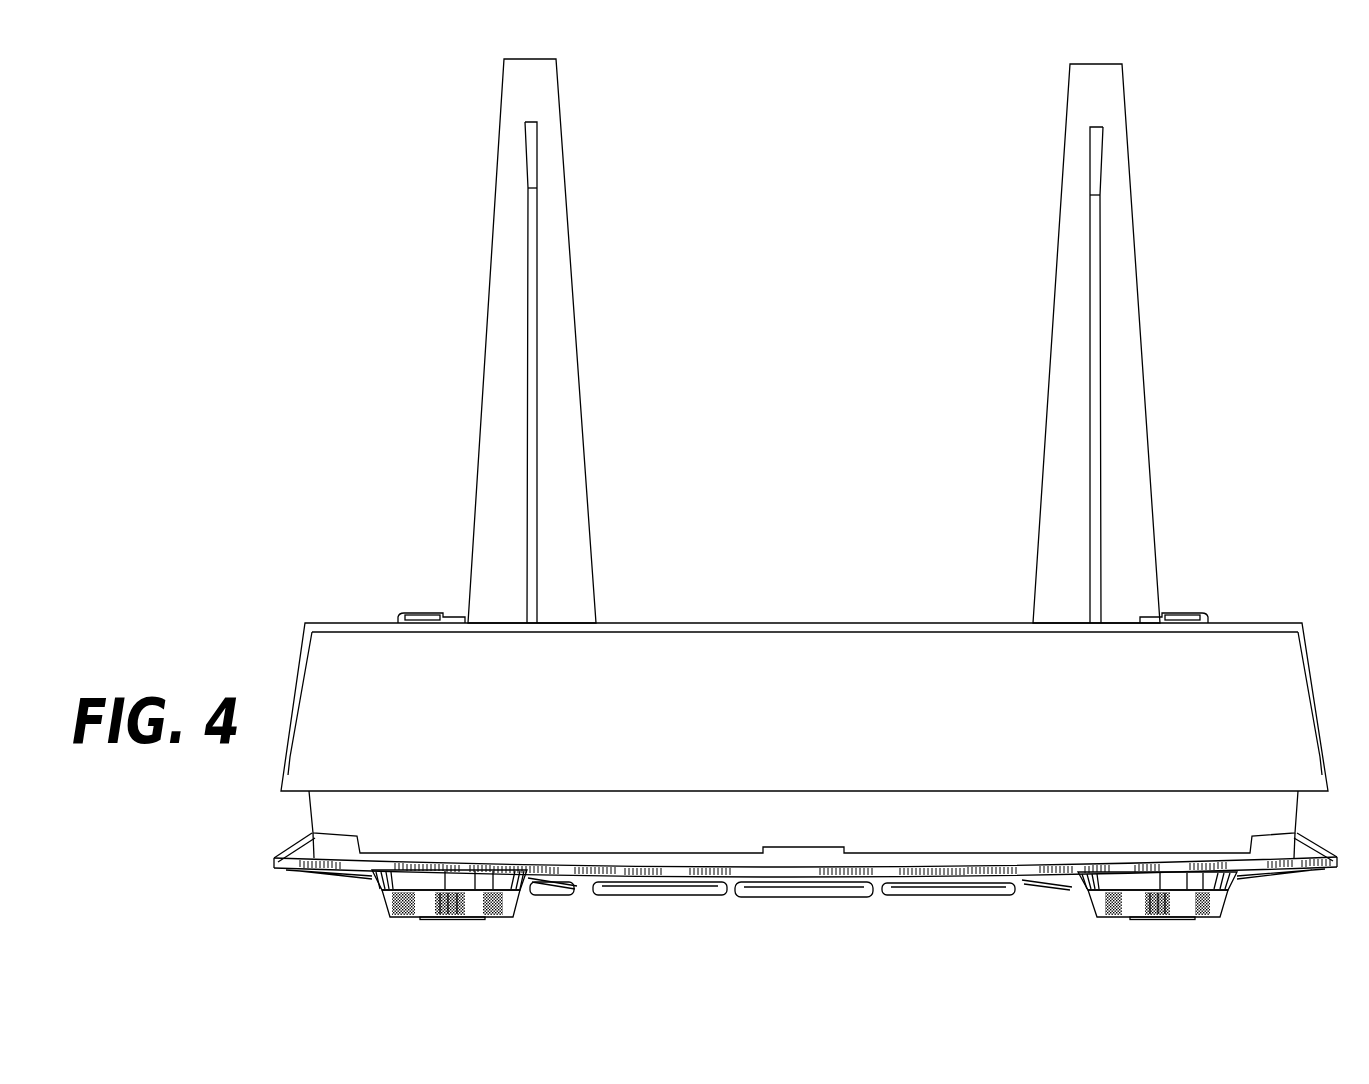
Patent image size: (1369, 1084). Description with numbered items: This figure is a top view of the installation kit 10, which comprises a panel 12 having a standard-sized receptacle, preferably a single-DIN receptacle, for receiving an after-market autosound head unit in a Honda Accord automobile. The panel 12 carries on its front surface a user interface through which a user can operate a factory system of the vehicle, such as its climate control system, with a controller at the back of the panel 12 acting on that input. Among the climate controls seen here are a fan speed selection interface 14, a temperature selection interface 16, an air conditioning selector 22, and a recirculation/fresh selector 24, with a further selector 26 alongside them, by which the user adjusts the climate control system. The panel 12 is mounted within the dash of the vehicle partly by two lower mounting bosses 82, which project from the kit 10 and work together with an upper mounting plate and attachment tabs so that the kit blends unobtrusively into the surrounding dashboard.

The installation kit 10 is at (220, 878).
The panel 12 is at (372, 882).
The fan speed selection interface 14 is at (440, 918).
The temperature selection interface 16 is at (1220, 905).
The air conditioning selector 22 is at (687, 895).
The recirculation/fresh selector 24 is at (800, 895).
The button 26 is at (945, 895).
The lower mounting bosses 82 is at (548, 296).